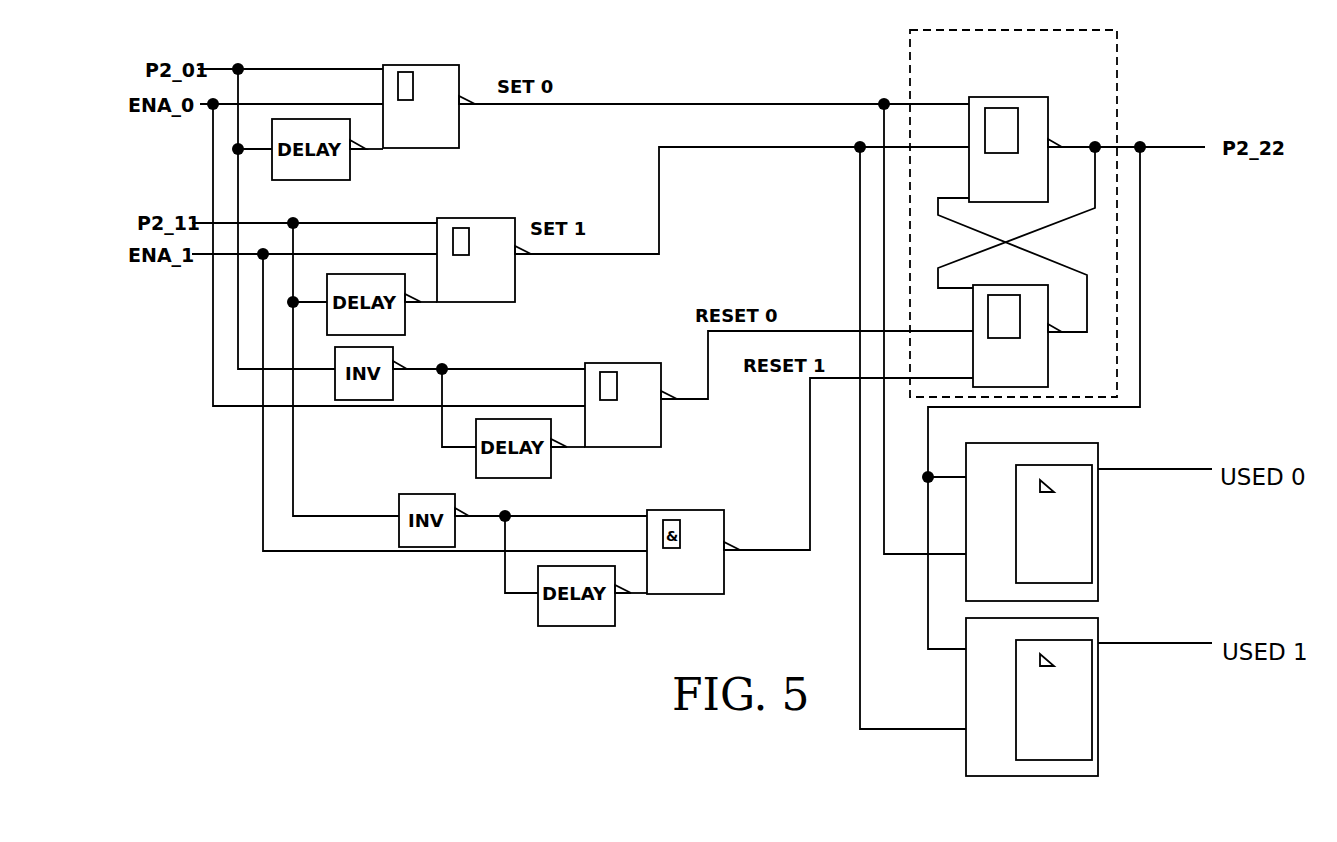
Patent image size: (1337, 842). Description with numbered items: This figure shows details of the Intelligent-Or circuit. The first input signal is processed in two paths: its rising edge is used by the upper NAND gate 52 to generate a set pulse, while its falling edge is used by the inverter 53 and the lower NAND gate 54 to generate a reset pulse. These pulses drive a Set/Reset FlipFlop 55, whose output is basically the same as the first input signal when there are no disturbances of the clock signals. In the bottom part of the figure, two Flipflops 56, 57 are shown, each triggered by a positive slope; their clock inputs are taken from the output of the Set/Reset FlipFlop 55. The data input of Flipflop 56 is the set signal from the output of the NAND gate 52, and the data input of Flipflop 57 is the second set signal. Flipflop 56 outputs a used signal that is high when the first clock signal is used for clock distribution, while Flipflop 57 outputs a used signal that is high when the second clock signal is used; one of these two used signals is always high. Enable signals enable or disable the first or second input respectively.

The upper NAND gate 52 is at (459, 135).
The inverter 53 is at (393, 347).
The lower NAND gate 54 is at (657, 418).
The Set/Reset FlipFlop 55 is at (1117, 73).
The Flipflop 56 is at (1098, 550).
The Flipflop 57 is at (1098, 710).